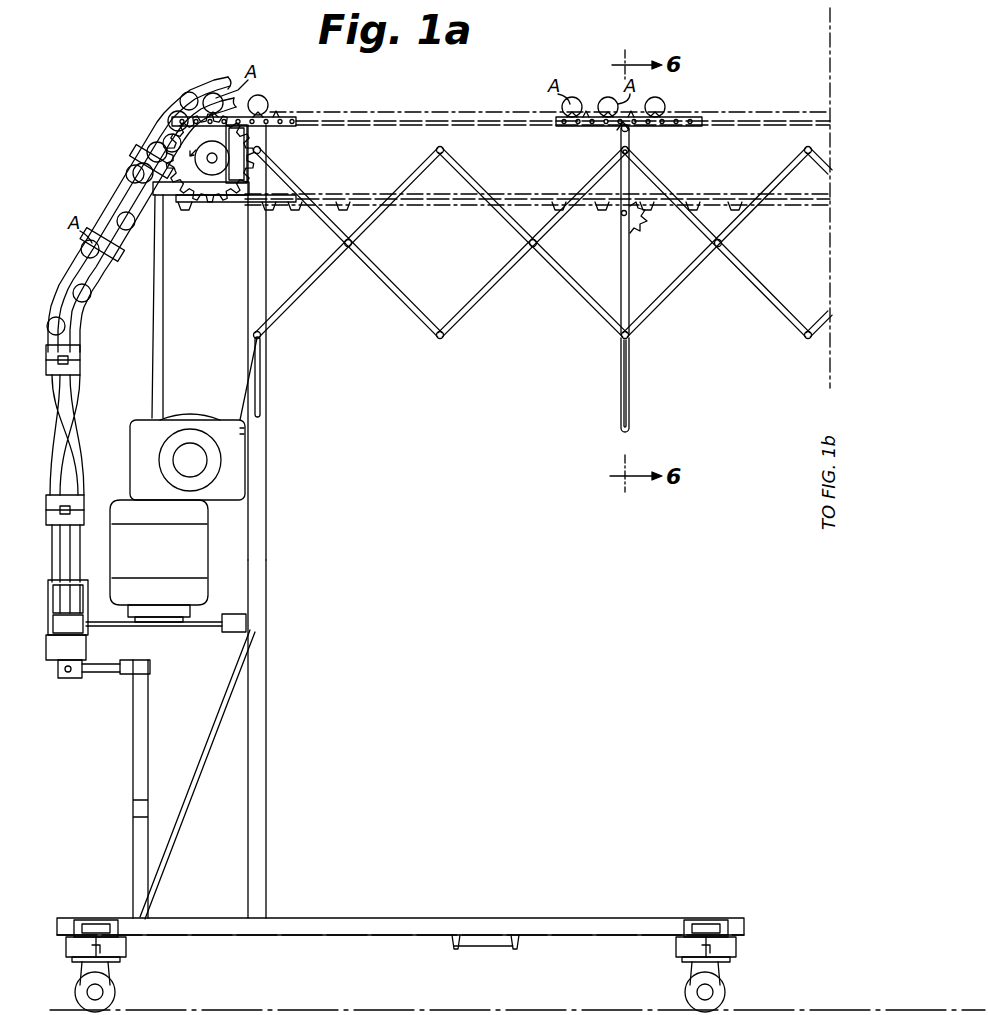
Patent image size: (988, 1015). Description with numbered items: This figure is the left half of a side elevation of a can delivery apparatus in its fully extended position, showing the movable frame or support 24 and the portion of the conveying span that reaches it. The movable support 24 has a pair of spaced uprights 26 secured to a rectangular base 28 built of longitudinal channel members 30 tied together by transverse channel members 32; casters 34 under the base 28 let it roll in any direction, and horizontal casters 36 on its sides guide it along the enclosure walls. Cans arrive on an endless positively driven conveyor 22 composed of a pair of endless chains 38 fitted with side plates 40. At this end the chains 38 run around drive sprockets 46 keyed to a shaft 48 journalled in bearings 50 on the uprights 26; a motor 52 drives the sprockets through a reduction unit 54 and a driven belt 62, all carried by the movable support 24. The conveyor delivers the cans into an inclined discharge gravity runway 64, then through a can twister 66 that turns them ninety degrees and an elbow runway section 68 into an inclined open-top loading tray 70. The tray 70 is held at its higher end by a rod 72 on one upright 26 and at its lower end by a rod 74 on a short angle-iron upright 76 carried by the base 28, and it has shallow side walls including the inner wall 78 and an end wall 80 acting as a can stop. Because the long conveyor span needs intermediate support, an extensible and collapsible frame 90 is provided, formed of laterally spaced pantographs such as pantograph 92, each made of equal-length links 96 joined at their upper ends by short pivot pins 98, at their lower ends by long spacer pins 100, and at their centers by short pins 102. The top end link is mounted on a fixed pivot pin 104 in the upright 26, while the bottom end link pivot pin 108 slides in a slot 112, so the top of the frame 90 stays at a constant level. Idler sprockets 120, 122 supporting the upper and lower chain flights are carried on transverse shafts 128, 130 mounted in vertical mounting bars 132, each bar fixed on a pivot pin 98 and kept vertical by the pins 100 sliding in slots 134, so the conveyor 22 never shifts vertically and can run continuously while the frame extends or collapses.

The endless positively driven conveyor 22 is at (432, 108).
The movable frame or support 24 is at (272, 432).
The uprights 26 is at (268, 690).
The rectangular base 28 is at (400, 944).
The longitudinal channel members 30 is at (322, 917).
The transverse channel members 32 is at (126, 948).
The casters 34 is at (116, 990).
The horizontal casters 36 is at (92, 928).
The endless chains 38 is at (580, 116).
The side plates 40 is at (264, 115).
The drive sprockets 46 is at (203, 140).
The shaft 48 is at (206, 166).
The bearings 50 is at (214, 164).
The motor 52 is at (186, 550).
The reduction unit 54 is at (195, 430).
The driven belt 62 is at (165, 292).
The inclined discharge gravity runway 64 is at (152, 138).
The can twister 66 is at (78, 416).
The elbow runway section 68 is at (84, 530).
The loading tray 70 is at (88, 648).
The rod 72 is at (190, 628).
The rod 74 is at (106, 674).
The short angle-iron upright 76 is at (62, 622).
The inner side wall 78 is at (88, 618).
The end wall 80 is at (66, 676).
The extensible and collapsible frame 90 is at (543, 267).
The pantograph 92 is at (410, 308).
The elongated links 96 is at (328, 272).
The short pivot pins 98 is at (445, 149).
The long pins 100 is at (445, 336).
The short pins 102 is at (352, 243).
The pivot pin 104 is at (262, 150).
The pivot pin 108 is at (262, 335).
The slot 112 is at (268, 372).
The idler sprockets 120 is at (620, 129).
The idler sprockets 122 is at (628, 220).
The transverse shaft 128 is at (620, 150).
The transverse shaft 130 is at (620, 214).
The vertical mounting bars 132 is at (632, 268).
The slots 134 is at (636, 386).